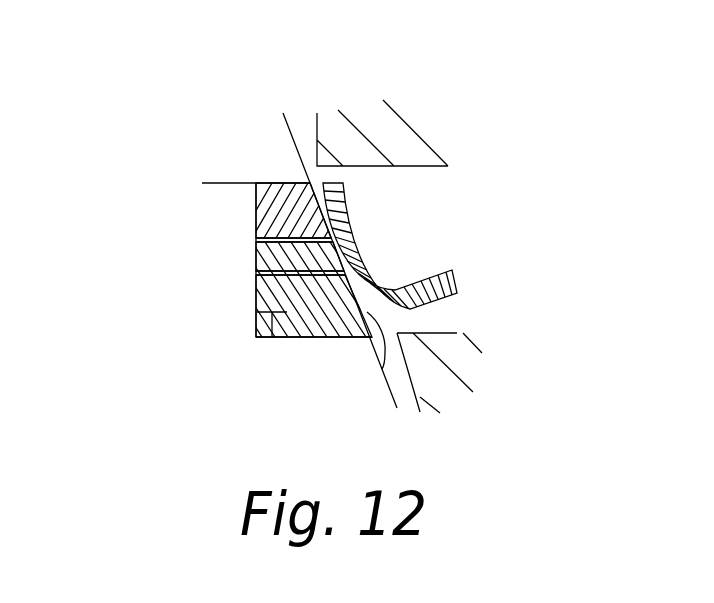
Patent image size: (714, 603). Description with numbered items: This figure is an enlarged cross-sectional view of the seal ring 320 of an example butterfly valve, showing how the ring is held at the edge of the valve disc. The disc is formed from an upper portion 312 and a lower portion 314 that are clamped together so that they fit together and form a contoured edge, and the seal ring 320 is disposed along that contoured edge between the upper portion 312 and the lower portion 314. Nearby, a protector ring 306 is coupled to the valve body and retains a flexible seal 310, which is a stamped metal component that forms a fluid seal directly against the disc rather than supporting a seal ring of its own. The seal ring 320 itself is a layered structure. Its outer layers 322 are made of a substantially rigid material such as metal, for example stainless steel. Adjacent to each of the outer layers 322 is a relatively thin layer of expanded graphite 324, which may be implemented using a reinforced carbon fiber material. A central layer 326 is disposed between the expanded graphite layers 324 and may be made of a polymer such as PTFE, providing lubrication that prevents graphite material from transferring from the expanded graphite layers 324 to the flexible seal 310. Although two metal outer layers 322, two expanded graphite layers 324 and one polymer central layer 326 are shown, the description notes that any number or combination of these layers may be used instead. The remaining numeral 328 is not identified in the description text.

The protector ring 306 is at (387, 140).
The flexible seal 310 is at (415, 285).
The upper portion 312 is at (253, 157).
The lower portion 314 is at (258, 365).
The seal ring 320 is at (280, 337).
The outer layers 322 is at (256, 212).
The expanded graphite layers 324 is at (256, 240).
The central layer 326 is at (256, 262).
The seal 328 is at (378, 365).